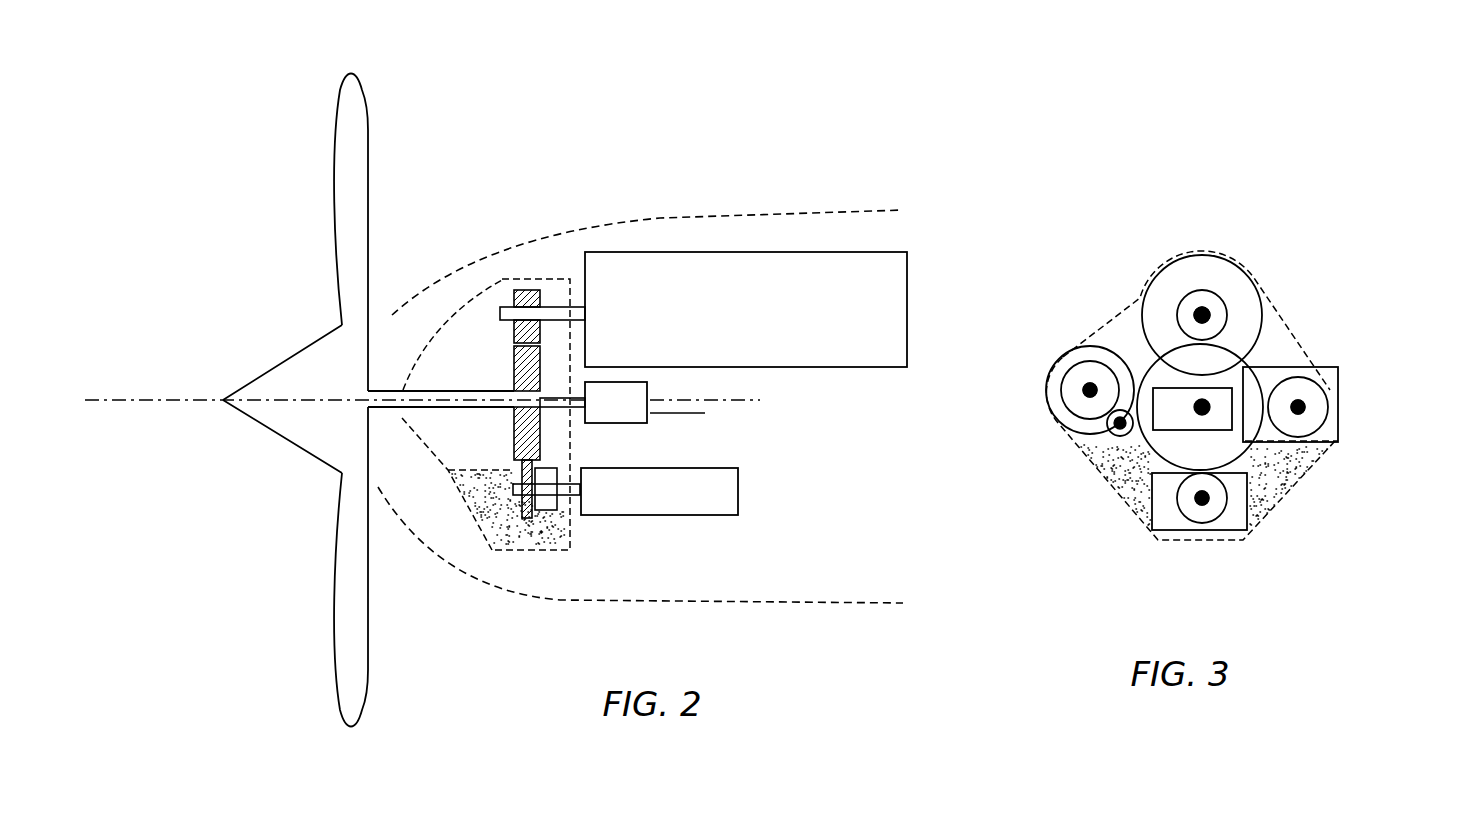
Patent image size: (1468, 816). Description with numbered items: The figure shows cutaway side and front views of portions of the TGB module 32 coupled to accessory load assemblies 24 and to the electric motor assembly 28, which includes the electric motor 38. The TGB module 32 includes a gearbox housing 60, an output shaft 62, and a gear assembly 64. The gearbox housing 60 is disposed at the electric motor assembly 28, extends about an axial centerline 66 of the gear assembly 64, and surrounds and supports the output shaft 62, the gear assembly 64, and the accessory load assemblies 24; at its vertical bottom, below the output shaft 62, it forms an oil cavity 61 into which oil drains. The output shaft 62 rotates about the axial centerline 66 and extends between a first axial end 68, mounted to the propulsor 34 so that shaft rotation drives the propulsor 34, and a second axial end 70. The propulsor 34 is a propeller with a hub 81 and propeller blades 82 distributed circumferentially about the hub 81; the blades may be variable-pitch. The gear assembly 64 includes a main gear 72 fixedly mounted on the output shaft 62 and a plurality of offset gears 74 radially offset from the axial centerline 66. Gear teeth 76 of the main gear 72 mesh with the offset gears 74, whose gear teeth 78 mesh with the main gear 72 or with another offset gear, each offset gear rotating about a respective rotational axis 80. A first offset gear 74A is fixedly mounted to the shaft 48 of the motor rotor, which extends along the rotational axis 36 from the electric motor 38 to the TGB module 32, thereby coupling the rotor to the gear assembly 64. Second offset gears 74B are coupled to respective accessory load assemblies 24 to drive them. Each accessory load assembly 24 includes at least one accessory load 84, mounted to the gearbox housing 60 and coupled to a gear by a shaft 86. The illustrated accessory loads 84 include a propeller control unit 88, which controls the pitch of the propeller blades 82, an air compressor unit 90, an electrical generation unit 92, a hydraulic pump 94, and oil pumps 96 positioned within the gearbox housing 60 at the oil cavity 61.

In FIG. 2, the accessory load assembly 24 is at (657, 525).
In FIG. 3, the accessory load assembly 24 is at (1222, 387).
In FIG. 2, the electric motor assembly 28 is at (823, 238).
In FIG. 3, the electric motor assembly 28 is at (1258, 281).
In FIG. 2, the TGB module 32 is at (465, 525).
In FIG. 3, the TGB module 32 is at (1313, 480).
In FIG. 2, the propulsor 34 is at (313, 475).
In FIG. 3, the rotational axis 36 is at (1193, 300).
In FIG. 2, the electric motor 38 is at (888, 250).
In FIG. 3, the shaft 48 is at (1207, 308).
In FIG. 2, the gearbox housing 60 is at (570, 279).
In FIG. 3, the gearbox housing 60 is at (1137, 298).
In FIG. 2, the oil cavity 61 is at (510, 530).
In FIG. 3, the oil cavity 61 is at (1140, 495).
In FIG. 2, the output shaft 62 is at (436, 390).
In FIG. 3, the output shaft 62 is at (1163, 462).
In FIG. 2, the gear assembly 64 is at (553, 437).
In FIG. 3, the gear assembly 64 is at (1340, 430).
In FIG. 2, the axial centerline 66 is at (180, 400).
In FIG. 2, the first axial end 68 is at (375, 415).
In FIG. 2, the second axial end 70 is at (577, 412).
In FIG. 2, the main gear 72 is at (514, 432).
In FIG. 3, the main gear 72 is at (1153, 463).
In FIG. 2, the offset gear 74 is at (512, 330).
In FIG. 3, the offset gear 74 is at (1205, 513).
In FIG. 3, the first offset gear 74A is at (1203, 307).
In FIG. 3, the second offset gear 74B is at (1110, 440).
In FIG. 2, the gear teeth 76 is at (527, 378).
In FIG. 2, the gear teeth 78 is at (527, 297).
In FIG. 3, the rotational axis 80 is at (1083, 390).
In FIG. 2, the hub 81 is at (272, 437).
In FIG. 2, the propeller blade 82 is at (333, 177).
In FIG. 2, the accessory load 84 is at (650, 390).
In FIG. 3, the accessory load 84 is at (1087, 345).
In FIG. 3, the shaft 86 is at (1088, 388).
In FIG. 2, the propeller control unit 88 is at (693, 415).
In FIG. 3, the air compressor unit 90 is at (1113, 343).
In FIG. 3, the electrical generation unit 92 is at (1270, 367).
In FIG. 2, the hydraulic pump 94 is at (705, 515).
In FIG. 3, the hydraulic pump 94 is at (1158, 532).
In FIG. 2, the oil pump 96 is at (545, 510).